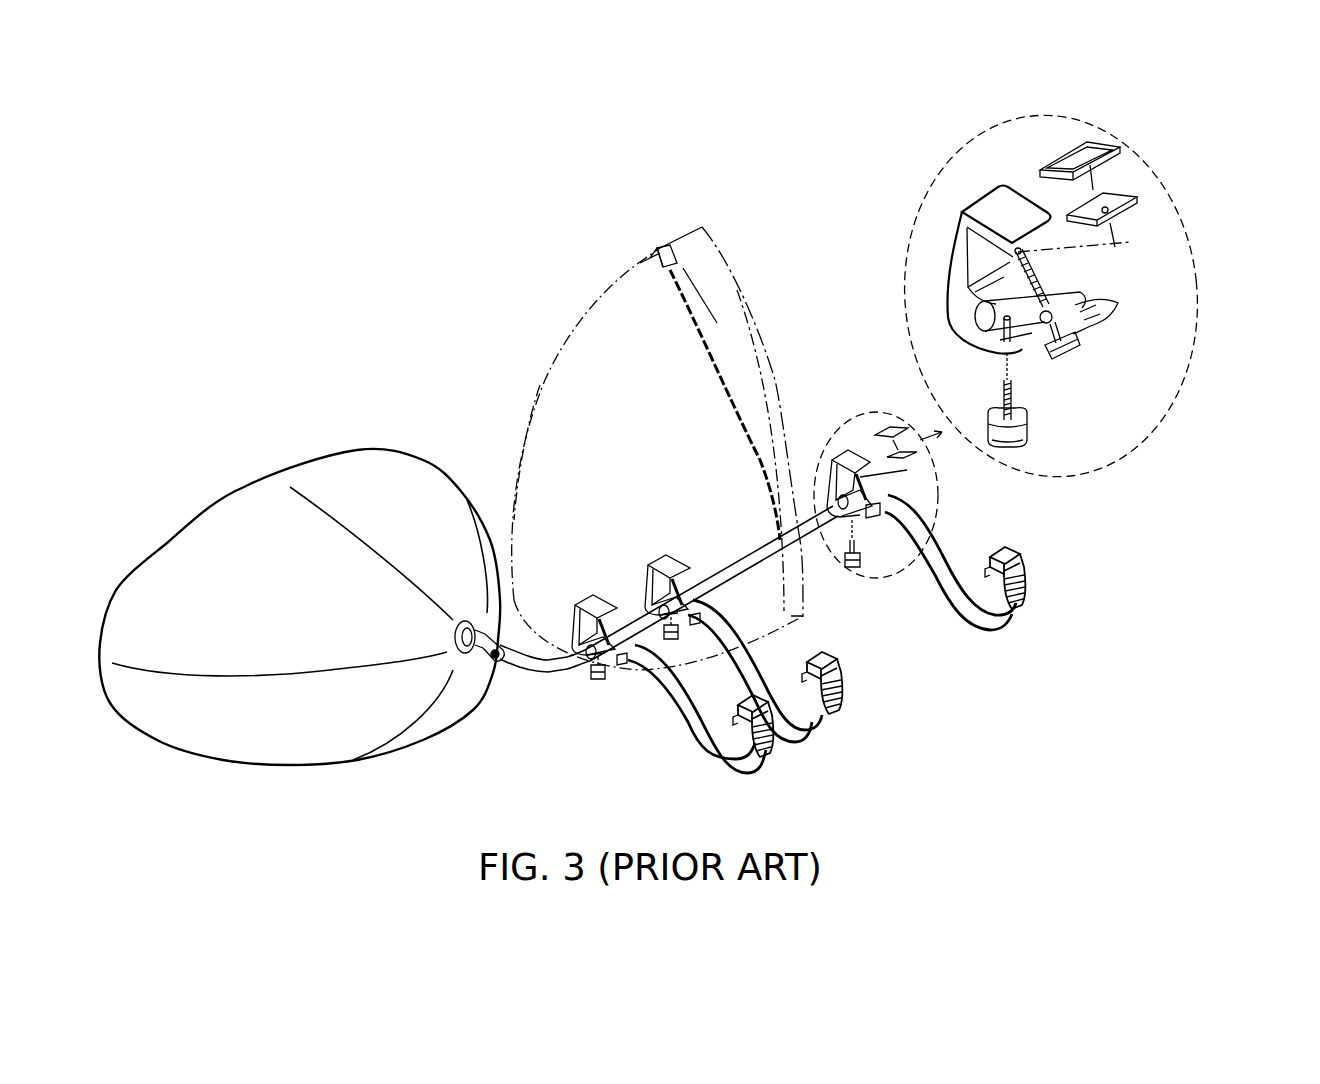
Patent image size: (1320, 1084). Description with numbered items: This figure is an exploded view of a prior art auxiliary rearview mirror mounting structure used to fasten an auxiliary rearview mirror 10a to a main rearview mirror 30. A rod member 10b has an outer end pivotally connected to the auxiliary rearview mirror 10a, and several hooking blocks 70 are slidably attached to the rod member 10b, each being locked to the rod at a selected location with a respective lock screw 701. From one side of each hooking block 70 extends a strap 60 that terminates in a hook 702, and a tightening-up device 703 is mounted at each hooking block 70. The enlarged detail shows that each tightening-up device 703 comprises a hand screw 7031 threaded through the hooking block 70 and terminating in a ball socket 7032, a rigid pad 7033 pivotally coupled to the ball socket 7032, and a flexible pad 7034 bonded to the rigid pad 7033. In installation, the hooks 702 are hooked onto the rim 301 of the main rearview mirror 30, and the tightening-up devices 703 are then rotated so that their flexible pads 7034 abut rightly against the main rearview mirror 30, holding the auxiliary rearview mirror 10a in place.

The auxiliary rearview mirror 10a is at (256, 505).
The rod member 10b is at (550, 670).
The main rearview mirror 30 is at (608, 363).
The rim 301 is at (537, 385).
The strap 60 is at (714, 325).
The hooking block 70 is at (660, 562).
The lock screw 701 is at (1028, 437).
The hook 702 is at (660, 258).
The tightening-up device 703 is at (1082, 348).
The hand screw 7031 is at (1045, 285).
The ball socket 7032 is at (1023, 272).
The rigid pad 7033 is at (1115, 195).
The flexible pad 7034 is at (1097, 142).